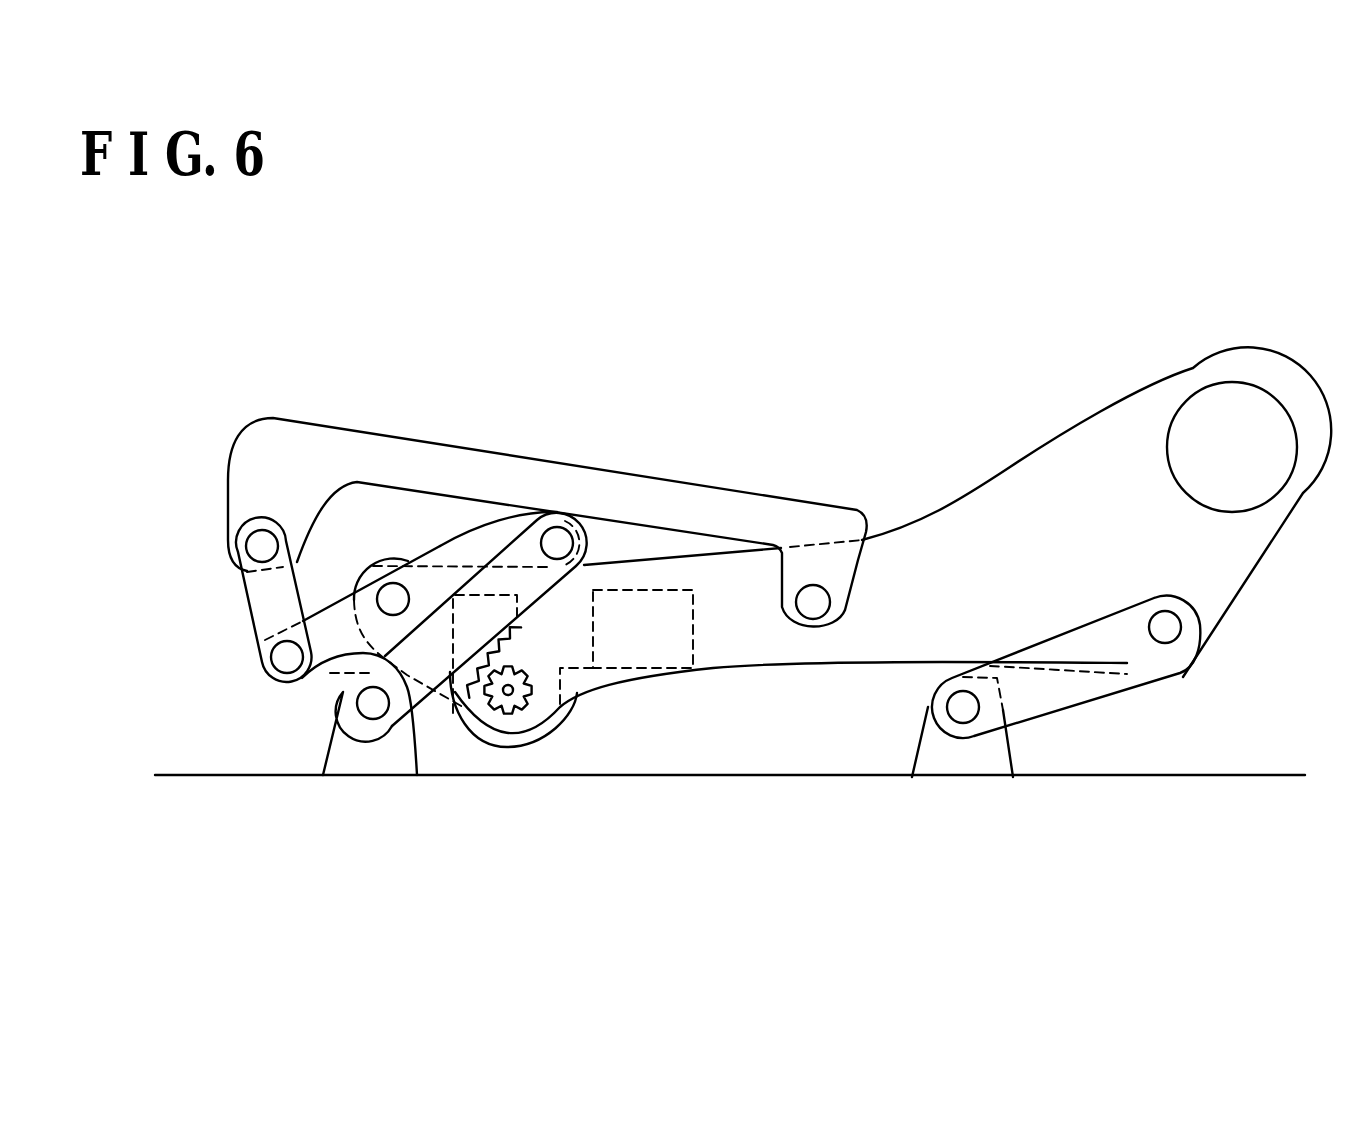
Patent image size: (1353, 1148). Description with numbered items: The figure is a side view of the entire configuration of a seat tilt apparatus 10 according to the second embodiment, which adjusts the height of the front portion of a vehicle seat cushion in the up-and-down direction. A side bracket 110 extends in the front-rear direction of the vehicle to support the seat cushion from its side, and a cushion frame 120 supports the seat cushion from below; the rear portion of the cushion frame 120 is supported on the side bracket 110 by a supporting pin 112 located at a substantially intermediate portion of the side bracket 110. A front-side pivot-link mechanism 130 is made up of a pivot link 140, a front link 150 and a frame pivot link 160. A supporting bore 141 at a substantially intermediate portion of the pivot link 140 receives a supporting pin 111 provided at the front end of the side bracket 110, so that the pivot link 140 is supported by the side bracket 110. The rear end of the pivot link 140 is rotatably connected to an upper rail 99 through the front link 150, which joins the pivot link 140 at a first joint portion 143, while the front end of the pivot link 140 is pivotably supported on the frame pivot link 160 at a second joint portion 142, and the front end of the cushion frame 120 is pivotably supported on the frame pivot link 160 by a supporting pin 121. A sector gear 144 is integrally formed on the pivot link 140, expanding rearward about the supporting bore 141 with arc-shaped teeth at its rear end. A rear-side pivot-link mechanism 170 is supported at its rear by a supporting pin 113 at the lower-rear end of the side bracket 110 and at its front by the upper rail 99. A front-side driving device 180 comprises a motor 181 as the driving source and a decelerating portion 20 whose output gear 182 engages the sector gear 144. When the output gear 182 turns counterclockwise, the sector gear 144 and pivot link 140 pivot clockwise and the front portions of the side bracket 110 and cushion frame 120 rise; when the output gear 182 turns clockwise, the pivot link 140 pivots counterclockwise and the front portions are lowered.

The seat tilt apparatus 10 is at (380, 345).
The decelerating portion 20 is at (597, 640).
The upper rail 99 is at (652, 851).
The side bracket 110 is at (1073, 450).
The supporting pin 111 is at (435, 535).
The supporting pin 112 is at (812, 600).
The supporting pin 113 is at (1167, 627).
The cushion frame 120 is at (727, 503).
The supporting pin 121 is at (262, 547).
The front-side pivot-link mechanism 130 is at (265, 702).
The pivot link 140 is at (473, 543).
The supporting bore 141 is at (393, 597).
The second joint portion 142 is at (287, 658).
The first joint portion 143 is at (563, 510).
The sector gear 144 is at (466, 674).
The front link 150 is at (593, 553).
The frame pivot link 160 is at (262, 601).
The rear-side pivot-link mechanism 170 is at (1063, 685).
The front-side driving device 180 is at (573, 683).
The motor 181 is at (680, 627).
The output gear 182 is at (499, 708).